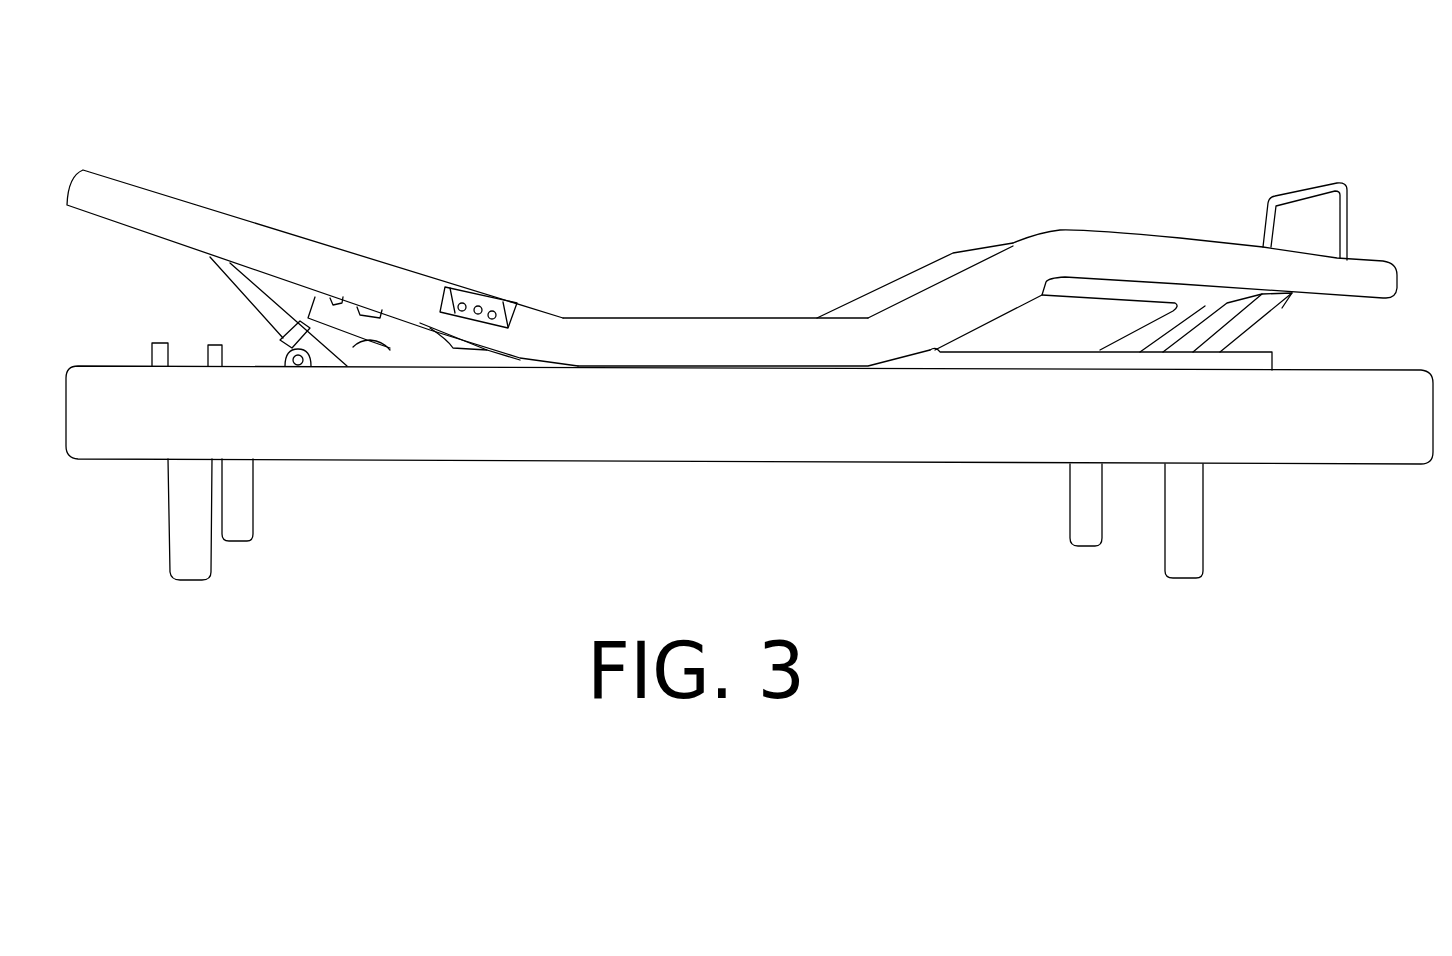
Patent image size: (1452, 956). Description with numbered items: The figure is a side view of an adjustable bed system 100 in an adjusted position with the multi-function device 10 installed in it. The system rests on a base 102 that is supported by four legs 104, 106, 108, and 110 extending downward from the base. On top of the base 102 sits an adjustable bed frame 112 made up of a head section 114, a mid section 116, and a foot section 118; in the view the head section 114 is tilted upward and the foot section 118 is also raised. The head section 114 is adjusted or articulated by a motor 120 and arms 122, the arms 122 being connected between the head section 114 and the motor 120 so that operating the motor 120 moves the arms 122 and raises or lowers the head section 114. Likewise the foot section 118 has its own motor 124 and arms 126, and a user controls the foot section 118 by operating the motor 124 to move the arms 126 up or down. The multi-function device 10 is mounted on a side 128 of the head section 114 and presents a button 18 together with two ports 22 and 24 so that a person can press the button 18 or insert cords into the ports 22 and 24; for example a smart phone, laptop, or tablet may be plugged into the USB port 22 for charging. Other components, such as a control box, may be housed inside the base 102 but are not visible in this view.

The adjustable bed system 100 is at (732, 206).
The base 102 is at (450, 463).
The leg 104 is at (182, 583).
The leg 106 is at (243, 545).
The leg 108 is at (1183, 583).
The leg 110 is at (1082, 550).
The adjustable bed frame 112 is at (787, 277).
The head section 114 is at (247, 162).
The mid section 116 is at (579, 267).
The foot section 118 is at (1096, 182).
The motor 120 is at (258, 329).
The arms 122 is at (203, 279).
The motor 124 is at (1107, 326).
The arms 126 is at (1263, 333).
The side 128 is at (342, 265).
The multi-function device 10 is at (484, 237).
The port 22 is at (462, 300).
The port 24 is at (481, 304).
The button 18 is at (476, 245).